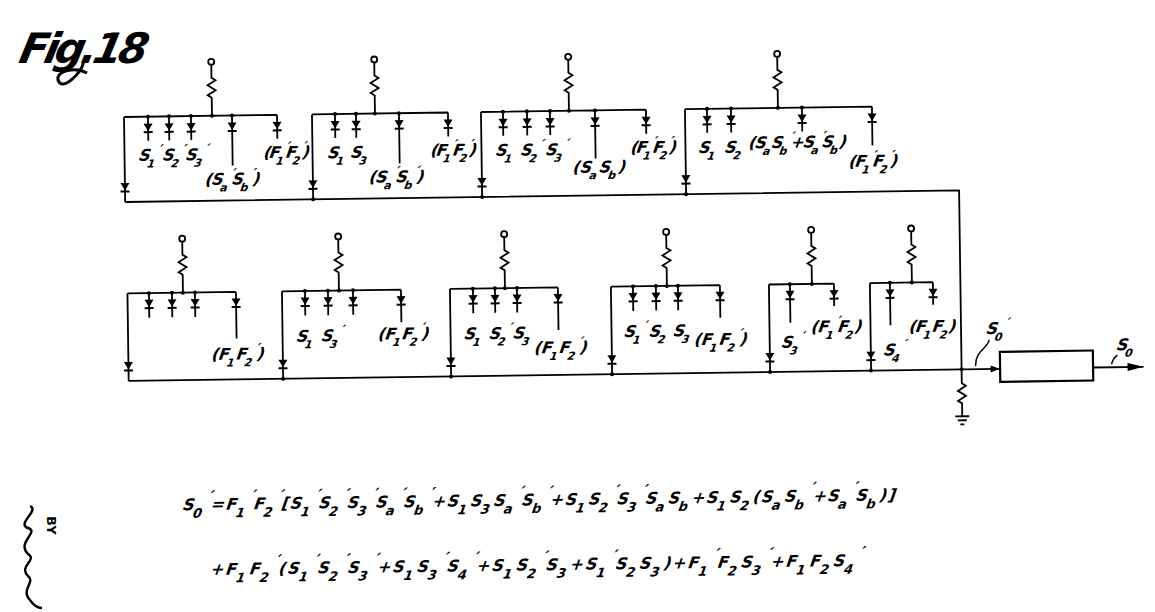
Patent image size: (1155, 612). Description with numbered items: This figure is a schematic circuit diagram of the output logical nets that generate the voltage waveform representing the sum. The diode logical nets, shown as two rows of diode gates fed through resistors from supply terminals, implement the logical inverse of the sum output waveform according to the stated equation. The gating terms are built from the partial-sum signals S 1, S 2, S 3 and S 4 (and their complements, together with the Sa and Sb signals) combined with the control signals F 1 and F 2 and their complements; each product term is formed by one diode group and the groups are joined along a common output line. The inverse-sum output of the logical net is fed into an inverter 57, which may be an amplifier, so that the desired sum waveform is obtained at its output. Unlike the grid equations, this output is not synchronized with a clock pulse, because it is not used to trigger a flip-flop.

The inverter 57 is at (1041, 394).
The S1 diode 1 is at (152, 322).
The S2 diode 2 is at (177, 322).
The S3 diode 3 is at (199, 321).
The S4 diode 4 is at (355, 319).